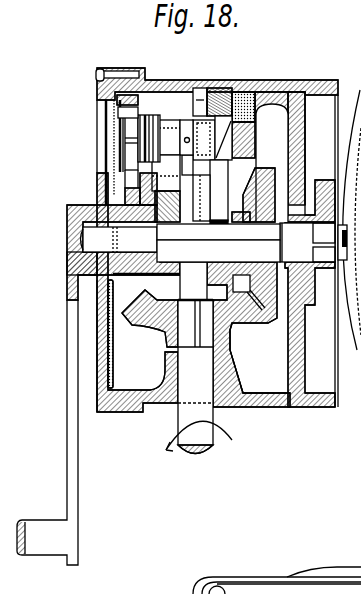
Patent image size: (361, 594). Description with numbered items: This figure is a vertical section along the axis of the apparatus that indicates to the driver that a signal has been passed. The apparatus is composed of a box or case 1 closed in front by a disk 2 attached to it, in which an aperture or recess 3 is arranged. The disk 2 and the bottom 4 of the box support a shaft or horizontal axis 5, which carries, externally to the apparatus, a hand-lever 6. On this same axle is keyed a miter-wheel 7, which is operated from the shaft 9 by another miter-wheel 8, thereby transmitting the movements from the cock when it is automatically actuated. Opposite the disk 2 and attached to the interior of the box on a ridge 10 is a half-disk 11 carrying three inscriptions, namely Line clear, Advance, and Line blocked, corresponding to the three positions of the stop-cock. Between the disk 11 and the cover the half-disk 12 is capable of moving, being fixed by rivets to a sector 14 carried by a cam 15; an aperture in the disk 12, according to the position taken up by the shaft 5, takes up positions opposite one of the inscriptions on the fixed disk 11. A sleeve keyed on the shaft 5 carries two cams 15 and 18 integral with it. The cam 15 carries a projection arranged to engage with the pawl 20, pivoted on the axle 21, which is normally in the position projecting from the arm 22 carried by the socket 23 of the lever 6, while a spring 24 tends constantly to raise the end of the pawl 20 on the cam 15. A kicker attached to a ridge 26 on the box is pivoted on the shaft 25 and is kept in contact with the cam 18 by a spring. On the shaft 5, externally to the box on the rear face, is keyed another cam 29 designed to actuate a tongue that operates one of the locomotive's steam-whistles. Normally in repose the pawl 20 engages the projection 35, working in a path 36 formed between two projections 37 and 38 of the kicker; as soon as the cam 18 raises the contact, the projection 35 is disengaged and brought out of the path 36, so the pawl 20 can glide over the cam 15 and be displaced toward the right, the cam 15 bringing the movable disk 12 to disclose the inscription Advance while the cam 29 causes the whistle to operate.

The box or case 1 is at (332, 84).
The disk 2 is at (95, 377).
The aperture or recess 3 is at (100, 170).
The bottom of the box 4 is at (297, 133).
The shaft or horizontal axis 5 is at (340, 240).
The hand-lever 6 is at (70, 490).
The miter-wheel 7 is at (263, 178).
The miter-wheel 8 is at (238, 325).
The shaft 9 is at (199, 377).
The ridge 10 is at (110, 70).
The half-disk 11 is at (167, 163).
The half-disk 12 is at (110, 190).
The sector 14 is at (67, 222).
The cam 15 is at (218, 230).
The cam 18 is at (210, 288).
The pawl 20 is at (100, 168).
The axle 21 is at (170, 127).
The arm 22 is at (125, 145).
The socket 23 is at (87, 259).
The spring 24 is at (140, 133).
The shaft 25 is at (252, 143).
The ridge 26 is at (271, 157).
The cam 29 is at (325, 188).
The projection 35 is at (233, 172).
The path 36 is at (252, 90).
The projection 37 is at (198, 100).
The projection 38 is at (218, 252).